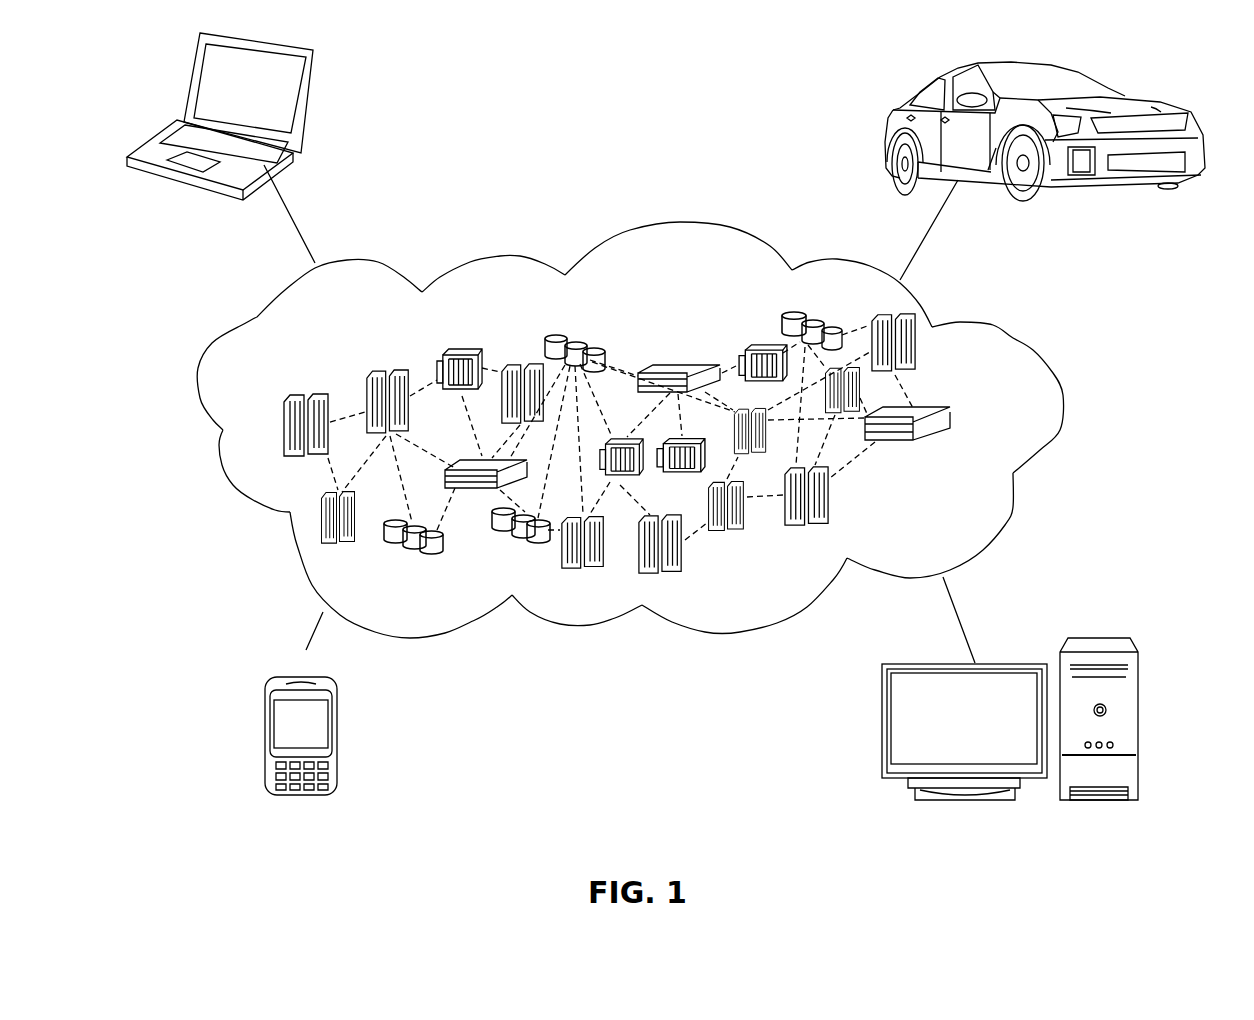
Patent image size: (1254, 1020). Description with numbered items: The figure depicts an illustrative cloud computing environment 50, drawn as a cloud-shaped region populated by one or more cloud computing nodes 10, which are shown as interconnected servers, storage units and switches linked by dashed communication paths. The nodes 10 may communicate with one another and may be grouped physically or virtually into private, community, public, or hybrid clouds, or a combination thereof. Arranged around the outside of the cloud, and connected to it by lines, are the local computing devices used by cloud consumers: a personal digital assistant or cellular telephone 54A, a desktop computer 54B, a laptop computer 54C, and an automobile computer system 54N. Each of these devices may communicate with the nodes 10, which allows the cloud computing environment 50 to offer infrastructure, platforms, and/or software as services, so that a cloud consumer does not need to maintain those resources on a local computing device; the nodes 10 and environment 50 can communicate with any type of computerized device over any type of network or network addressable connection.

The cloud computing nodes 10 is at (1002, 424).
The cloud computing environment 50 is at (1020, 337).
The personal digital assistant (PDA) or cellular telephone 54A is at (262, 735).
The desktop computer 54B is at (1100, 638).
The laptop computer 54C is at (307, 103).
The automobile computer system 54N is at (891, 110).